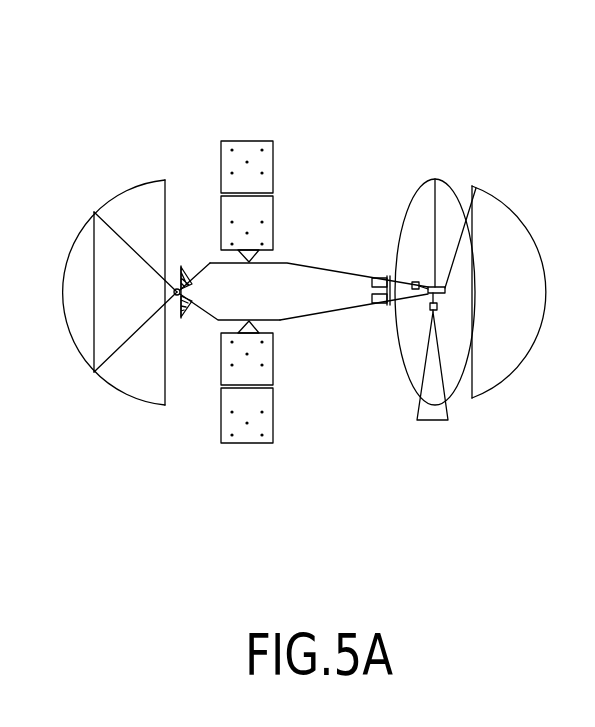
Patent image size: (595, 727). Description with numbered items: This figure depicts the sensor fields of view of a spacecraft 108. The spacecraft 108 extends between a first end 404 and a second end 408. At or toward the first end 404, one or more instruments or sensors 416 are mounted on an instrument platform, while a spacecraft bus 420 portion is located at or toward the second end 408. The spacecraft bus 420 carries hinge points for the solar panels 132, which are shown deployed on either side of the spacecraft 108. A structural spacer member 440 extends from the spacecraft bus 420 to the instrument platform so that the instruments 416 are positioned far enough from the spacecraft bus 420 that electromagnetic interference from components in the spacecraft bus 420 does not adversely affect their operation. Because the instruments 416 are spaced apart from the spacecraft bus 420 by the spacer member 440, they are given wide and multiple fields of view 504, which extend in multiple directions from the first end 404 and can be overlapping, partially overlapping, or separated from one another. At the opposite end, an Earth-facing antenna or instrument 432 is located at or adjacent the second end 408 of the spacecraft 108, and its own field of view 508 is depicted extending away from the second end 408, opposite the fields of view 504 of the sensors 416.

The field of view 508 is at (120, 212).
The second end 408 is at (205, 263).
The antenna or instrument 432 is at (178, 300).
The spacecraft bus 420 is at (218, 322).
The solar panels 132 is at (247, 140).
The spacecraft 108 is at (320, 263).
The spacer member 440 is at (298, 318).
The instruments or sensors 416 is at (413, 282).
The first end 404 is at (423, 282).
The fields of view 504 is at (435, 179).